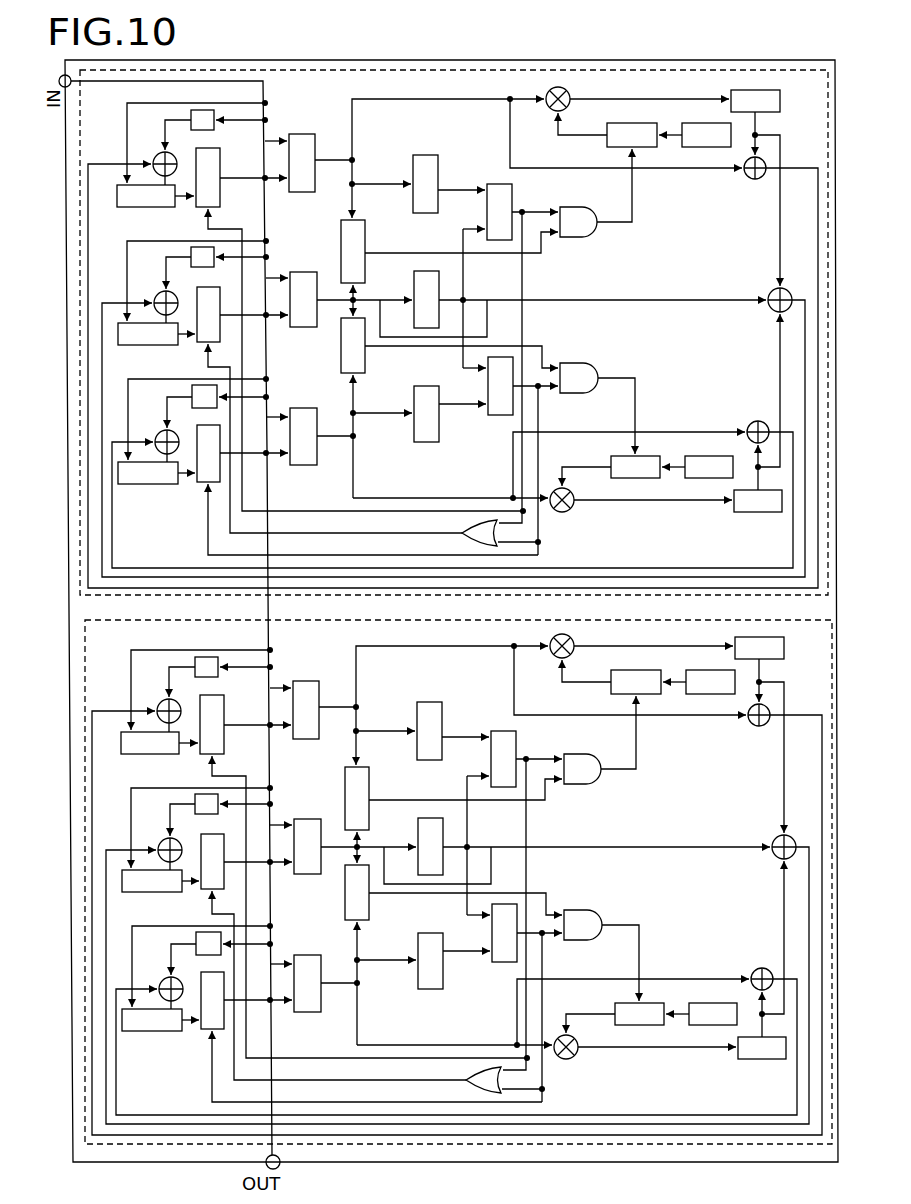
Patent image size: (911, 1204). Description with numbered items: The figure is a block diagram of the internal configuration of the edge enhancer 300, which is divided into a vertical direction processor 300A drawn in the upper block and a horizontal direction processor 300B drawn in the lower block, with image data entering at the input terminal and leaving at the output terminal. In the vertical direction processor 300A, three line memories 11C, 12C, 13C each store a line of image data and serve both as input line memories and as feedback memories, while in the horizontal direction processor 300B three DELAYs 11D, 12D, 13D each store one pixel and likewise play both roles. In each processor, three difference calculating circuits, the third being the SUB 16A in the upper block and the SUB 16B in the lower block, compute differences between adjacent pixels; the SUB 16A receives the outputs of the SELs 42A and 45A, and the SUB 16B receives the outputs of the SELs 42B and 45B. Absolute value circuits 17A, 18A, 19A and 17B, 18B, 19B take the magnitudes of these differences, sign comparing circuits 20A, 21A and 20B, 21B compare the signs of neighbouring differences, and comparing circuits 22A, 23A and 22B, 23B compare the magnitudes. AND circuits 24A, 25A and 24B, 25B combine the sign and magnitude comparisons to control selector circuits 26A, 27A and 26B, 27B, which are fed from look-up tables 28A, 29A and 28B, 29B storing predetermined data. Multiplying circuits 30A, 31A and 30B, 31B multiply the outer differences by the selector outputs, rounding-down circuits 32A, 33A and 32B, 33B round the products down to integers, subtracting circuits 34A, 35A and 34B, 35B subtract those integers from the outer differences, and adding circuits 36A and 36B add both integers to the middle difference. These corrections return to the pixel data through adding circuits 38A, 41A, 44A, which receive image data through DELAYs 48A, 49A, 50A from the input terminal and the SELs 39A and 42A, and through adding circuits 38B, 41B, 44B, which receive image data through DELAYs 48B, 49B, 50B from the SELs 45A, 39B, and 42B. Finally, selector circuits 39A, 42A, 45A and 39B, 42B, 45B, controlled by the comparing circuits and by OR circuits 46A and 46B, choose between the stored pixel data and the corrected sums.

The edge enhancer 300 is at (470, 60).
The vertical direction processor 300A is at (392, 71).
The horizontal direction processor 300B is at (440, 1144).
The line memory 11C is at (135, 208).
The line memory 12C is at (135, 346).
The line memory 13C is at (135, 485).
The DELAY 11D is at (154, 759).
The DELAY 12D is at (155, 896).
The DELAY 13D is at (155, 1042).
The SUB 16A is at (302, 193).
The SUB 16B is at (343, 865).
The ABS 17A is at (412, 180).
The ABS 18A is at (413, 294).
The ABS 19A is at (413, 425).
The ABS 17B is at (421, 727).
The ABS 18B is at (573, 845).
The ABS 19B is at (423, 965).
The sign comparing circuit 20A is at (366, 224).
The sign comparing circuit 21A is at (366, 356).
The sign comparing circuit 20B is at (453, 777).
The sign comparing circuit 21B is at (453, 946).
The COMP 22A is at (499, 184).
The COMP 23A is at (500, 416).
The COMP 22B is at (511, 884).
The COMP 23B is at (514, 1003).
The AND 24A is at (566, 207).
The AND 25A is at (571, 393).
The AND 24B is at (585, 740).
The AND 25B is at (589, 955).
The SEL 26A is at (608, 147).
The SEL 27A is at (611, 465).
The SEL 26B is at (611, 686).
The SEL 27B is at (615, 1012).
The LUT 28A is at (691, 147).
The LUT 29A is at (689, 456).
The LUT 28B is at (689, 692).
The LUT 29B is at (691, 1003).
The multiplying circuit 30A is at (548, 108).
The multiplying circuit 31A is at (570, 492).
The multiplying circuit 30B is at (551, 674).
The multiplying circuit 31B is at (546, 1043).
The INT 32A is at (731, 95).
The INT 33A is at (734, 509).
The INT 32B is at (733, 662).
The INT 33B is at (735, 1034).
The subtracting circuit 34A is at (745, 177).
The subtracting circuit 35A is at (751, 424).
The adding circuit 36A is at (773, 311).
The subtracting circuit 34B is at (457, 919).
The subtracting circuit 35B is at (456, 1028).
The adding circuit 36B is at (457, 903).
The adding circuit 38A is at (157, 157).
The adding circuit 41A is at (160, 295).
The adding circuit 44A is at (160, 433).
The adding circuit 38B is at (153, 700).
The adding circuit 41B is at (155, 838).
The adding circuit 44B is at (156, 976).
The SEL 39A is at (221, 170).
The SEL 42A is at (221, 311).
The SEL 45A is at (221, 449).
The SEL 39B is at (365, 877).
The SEL 42B is at (333, 957).
The SEL 45B is at (371, 1037).
The OR 46A is at (463, 533).
The OR 46B is at (476, 1078).
The DELAY 48A is at (265, 103).
The DELAY 49A is at (266, 241).
The DELAY 50A is at (266, 379).
The DELAY 48B is at (222, 685).
The DELAY 49B is at (222, 823).
The DELAY 50B is at (224, 962).